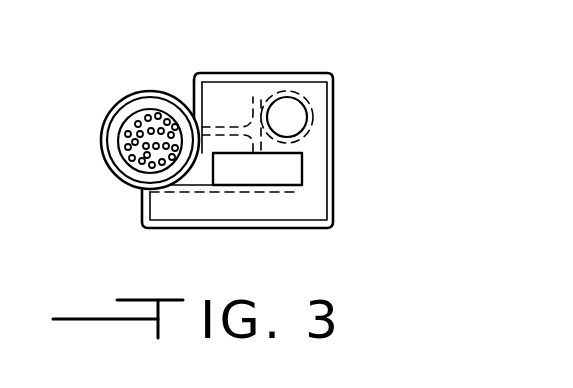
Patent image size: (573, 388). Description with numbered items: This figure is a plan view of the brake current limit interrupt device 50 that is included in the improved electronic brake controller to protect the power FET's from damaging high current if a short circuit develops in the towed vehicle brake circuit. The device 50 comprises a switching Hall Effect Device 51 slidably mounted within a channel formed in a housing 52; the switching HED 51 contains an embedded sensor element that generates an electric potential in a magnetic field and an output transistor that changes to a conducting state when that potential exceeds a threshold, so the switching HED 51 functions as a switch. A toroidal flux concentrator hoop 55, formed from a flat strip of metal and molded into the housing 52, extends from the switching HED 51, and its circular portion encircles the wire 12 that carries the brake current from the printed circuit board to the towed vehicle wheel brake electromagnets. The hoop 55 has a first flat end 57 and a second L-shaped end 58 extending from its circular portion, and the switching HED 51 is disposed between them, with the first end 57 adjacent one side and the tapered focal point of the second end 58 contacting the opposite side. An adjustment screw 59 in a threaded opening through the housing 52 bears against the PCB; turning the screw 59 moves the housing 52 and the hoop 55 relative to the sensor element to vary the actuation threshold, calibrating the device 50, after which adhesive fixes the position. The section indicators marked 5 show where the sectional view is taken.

The brake current limit interrupt device 50 is at (303, 52).
The switching Hall Effect Device 51 is at (302, 166).
The housing 52 is at (318, 208).
The toroidal flux concentrator hoop 55 is at (148, 90).
The wire 12 is at (124, 160).
The first flat end 57 is at (211, 194).
The second L-shaped end 58 is at (231, 118).
The adjustment screw 59 is at (297, 112).
The section line 5- 5 is at (275, 42).